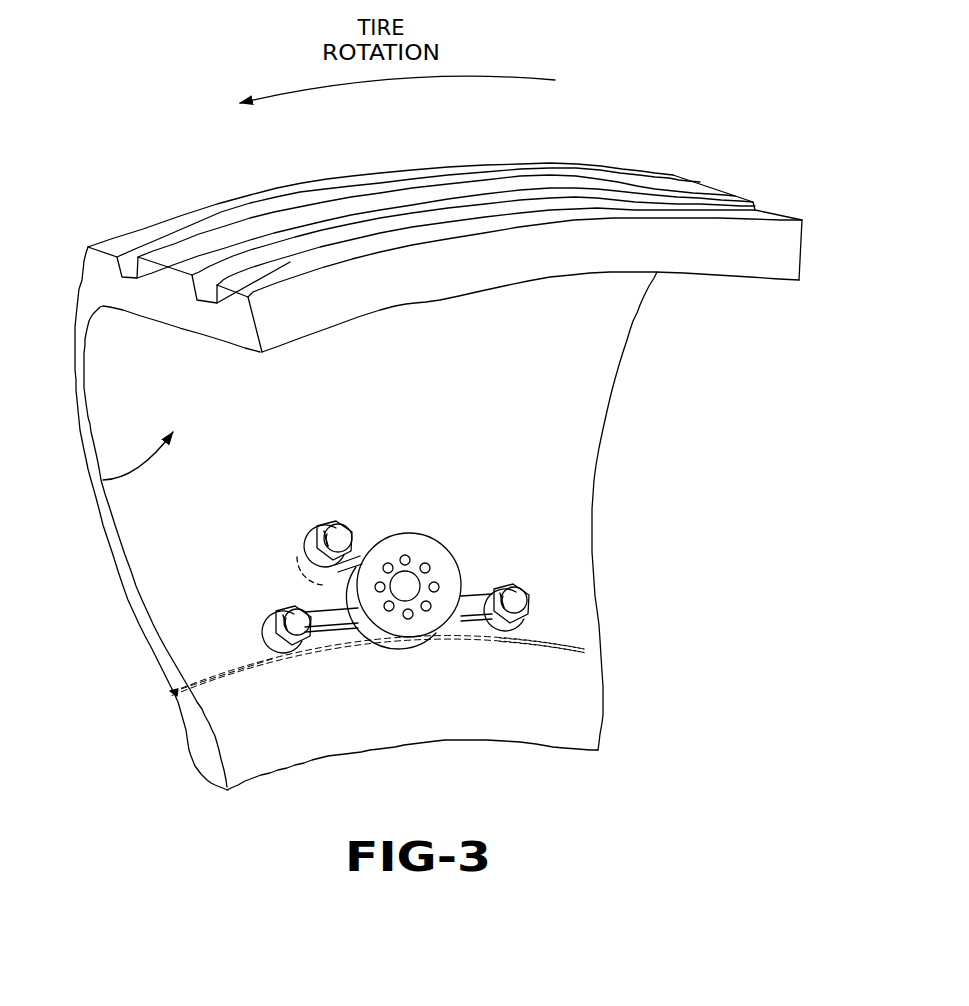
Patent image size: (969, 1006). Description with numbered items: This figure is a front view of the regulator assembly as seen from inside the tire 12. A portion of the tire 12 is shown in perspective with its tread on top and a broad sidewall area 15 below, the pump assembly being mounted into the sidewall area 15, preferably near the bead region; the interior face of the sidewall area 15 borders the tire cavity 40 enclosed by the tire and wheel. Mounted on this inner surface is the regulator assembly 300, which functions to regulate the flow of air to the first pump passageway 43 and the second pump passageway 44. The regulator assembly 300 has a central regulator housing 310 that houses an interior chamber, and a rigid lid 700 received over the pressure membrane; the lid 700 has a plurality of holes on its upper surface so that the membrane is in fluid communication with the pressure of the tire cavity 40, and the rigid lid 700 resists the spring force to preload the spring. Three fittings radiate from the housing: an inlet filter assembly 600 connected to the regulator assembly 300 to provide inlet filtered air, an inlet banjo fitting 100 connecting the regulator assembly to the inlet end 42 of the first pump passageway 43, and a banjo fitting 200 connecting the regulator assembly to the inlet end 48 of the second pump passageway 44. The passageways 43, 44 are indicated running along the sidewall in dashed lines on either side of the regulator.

The tire 12 is at (605, 182).
The sidewall area 15 is at (75, 366).
The tire cavity 40 is at (103, 480).
The inlet end of the first pump passageway 42 is at (277, 658).
The first pump passageway 43 is at (225, 670).
The second pump passageway 44 is at (557, 647).
The inlet end of the second pump passageway 48 is at (502, 640).
The inlet banjo fitting 100 is at (267, 597).
The banjo fitting 200 is at (522, 575).
The regulator assembly 300 is at (436, 527).
The central regulator housing 310 is at (375, 652).
The inlet filter assembly 600 is at (322, 522).
The rigid lid 700 is at (387, 532).